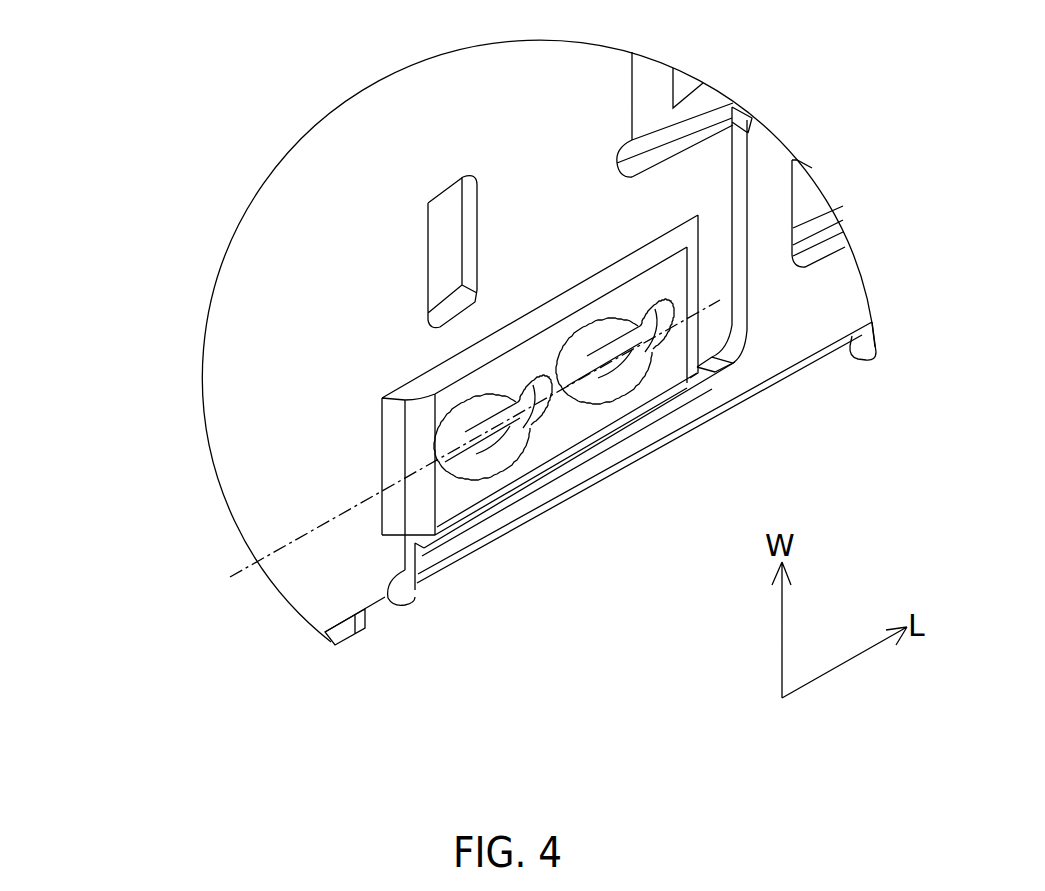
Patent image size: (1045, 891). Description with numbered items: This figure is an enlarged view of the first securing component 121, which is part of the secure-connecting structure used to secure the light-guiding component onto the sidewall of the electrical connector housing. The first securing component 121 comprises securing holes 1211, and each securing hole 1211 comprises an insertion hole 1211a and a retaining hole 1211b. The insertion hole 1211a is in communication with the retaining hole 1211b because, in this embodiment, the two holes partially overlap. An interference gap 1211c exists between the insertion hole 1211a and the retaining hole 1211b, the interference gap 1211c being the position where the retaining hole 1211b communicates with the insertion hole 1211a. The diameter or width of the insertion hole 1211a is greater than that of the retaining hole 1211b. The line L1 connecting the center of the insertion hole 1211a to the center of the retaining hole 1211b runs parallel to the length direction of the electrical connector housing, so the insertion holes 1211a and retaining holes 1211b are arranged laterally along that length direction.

The first securing component 121 is at (573, 435).
The securing hole 1211 is at (327, 508).
The insertion hole 1211a is at (470, 477).
The retaining hole 1211b is at (527, 435).
The interference gap 1211c is at (498, 390).
The line L1 is at (457, 454).